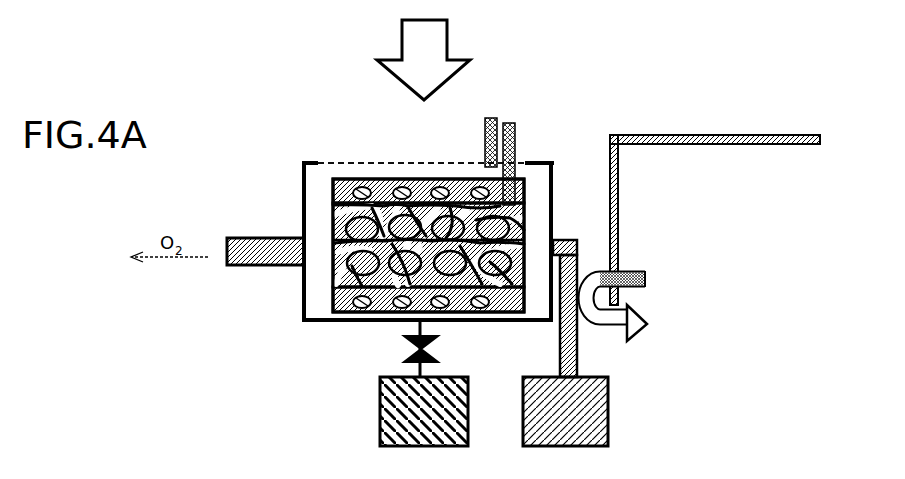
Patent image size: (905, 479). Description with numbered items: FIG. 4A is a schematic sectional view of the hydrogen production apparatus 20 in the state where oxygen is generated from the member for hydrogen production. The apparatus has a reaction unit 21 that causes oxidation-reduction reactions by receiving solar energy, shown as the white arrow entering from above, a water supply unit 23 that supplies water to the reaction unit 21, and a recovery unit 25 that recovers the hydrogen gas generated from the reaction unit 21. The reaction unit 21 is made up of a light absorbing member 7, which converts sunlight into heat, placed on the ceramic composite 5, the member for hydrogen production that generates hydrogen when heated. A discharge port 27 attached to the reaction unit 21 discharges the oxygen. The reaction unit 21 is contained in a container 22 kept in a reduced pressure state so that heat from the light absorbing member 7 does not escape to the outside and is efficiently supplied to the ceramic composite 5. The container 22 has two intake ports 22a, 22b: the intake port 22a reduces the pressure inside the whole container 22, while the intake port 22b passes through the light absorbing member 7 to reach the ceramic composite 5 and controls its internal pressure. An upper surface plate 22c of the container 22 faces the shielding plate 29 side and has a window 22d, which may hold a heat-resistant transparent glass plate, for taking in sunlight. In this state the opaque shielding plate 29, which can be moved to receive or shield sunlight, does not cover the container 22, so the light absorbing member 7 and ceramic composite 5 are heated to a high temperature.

The ceramic composite 5 is at (332, 225).
The light absorbing member 7 is at (348, 179).
The hydrogen production apparatus 20 is at (703, 186).
The reaction unit 21 is at (393, 211).
The container 22 is at (556, 162).
The intake port 22a is at (490, 118).
The intake port 22b is at (510, 122).
The upper surface plate 22c is at (534, 160).
The window 22d is at (352, 162).
The water supply unit 23 is at (403, 397).
The recovery unit 25 is at (592, 405).
The discharge port 27 is at (257, 250).
The shielding plate 29 is at (728, 163).